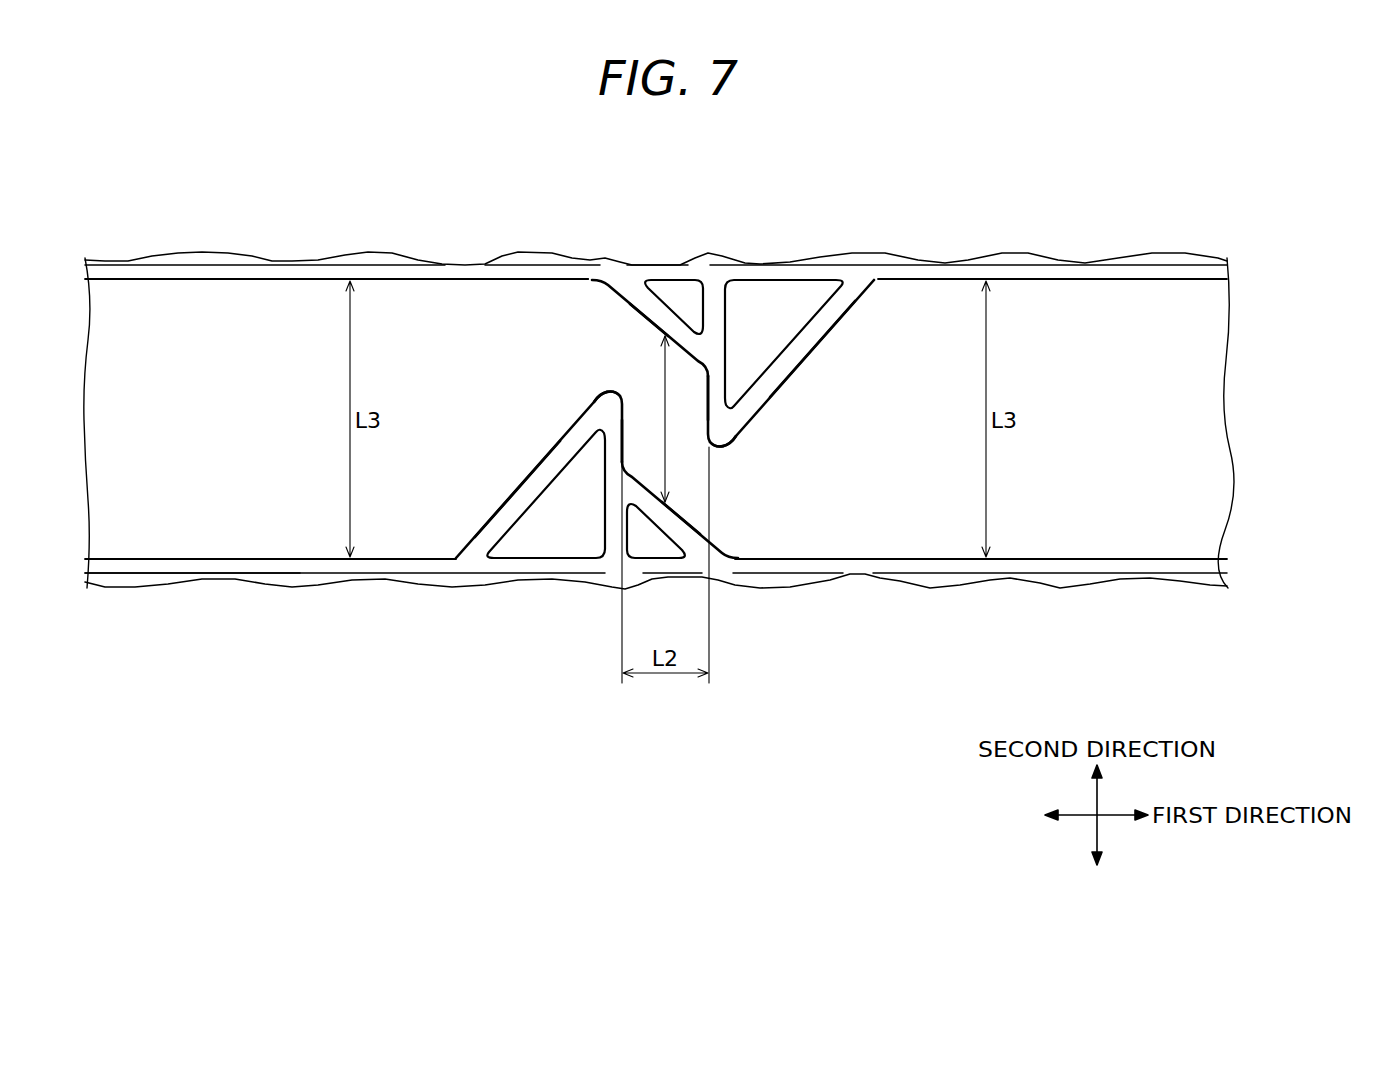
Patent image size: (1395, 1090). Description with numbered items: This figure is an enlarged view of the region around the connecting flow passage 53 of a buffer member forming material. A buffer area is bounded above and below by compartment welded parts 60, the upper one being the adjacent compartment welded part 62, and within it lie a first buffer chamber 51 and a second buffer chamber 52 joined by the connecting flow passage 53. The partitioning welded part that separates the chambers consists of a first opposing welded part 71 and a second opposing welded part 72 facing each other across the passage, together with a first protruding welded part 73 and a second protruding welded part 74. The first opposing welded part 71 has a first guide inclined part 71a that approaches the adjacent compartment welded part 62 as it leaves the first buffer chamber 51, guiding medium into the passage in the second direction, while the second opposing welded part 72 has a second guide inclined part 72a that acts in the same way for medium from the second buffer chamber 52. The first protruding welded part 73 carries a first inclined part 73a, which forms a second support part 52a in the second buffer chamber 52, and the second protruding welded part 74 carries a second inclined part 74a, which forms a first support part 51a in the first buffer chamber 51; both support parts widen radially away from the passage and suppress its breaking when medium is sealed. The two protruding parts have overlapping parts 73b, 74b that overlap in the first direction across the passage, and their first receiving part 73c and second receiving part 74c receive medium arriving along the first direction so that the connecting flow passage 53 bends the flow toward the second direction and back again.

The first buffer chamber 51 is at (1057, 497).
The first support part 51a is at (773, 495).
The second buffer chamber 52 is at (254, 352).
The second support part 52a is at (530, 345).
The connecting flow passage 53 is at (648, 398).
The compartment welded parts 60 is at (158, 570).
The adjacent compartment welded part 62 is at (150, 268).
The first opposing welded part 71 is at (640, 520).
The first guide inclined part 71a is at (683, 527).
The second opposing welded part 72 is at (693, 325).
The second guide inclined part 72a is at (648, 312).
The first protruding welded part 73 is at (570, 533).
The first inclined part 73a is at (520, 488).
The overlapping part 73b is at (631, 412).
The first receiving part 73c is at (612, 478).
The second protruding welded part 74 is at (762, 292).
The second inclined part 74a is at (805, 362).
The overlapping part 74b is at (706, 451).
The second receiving part 74c is at (714, 298).